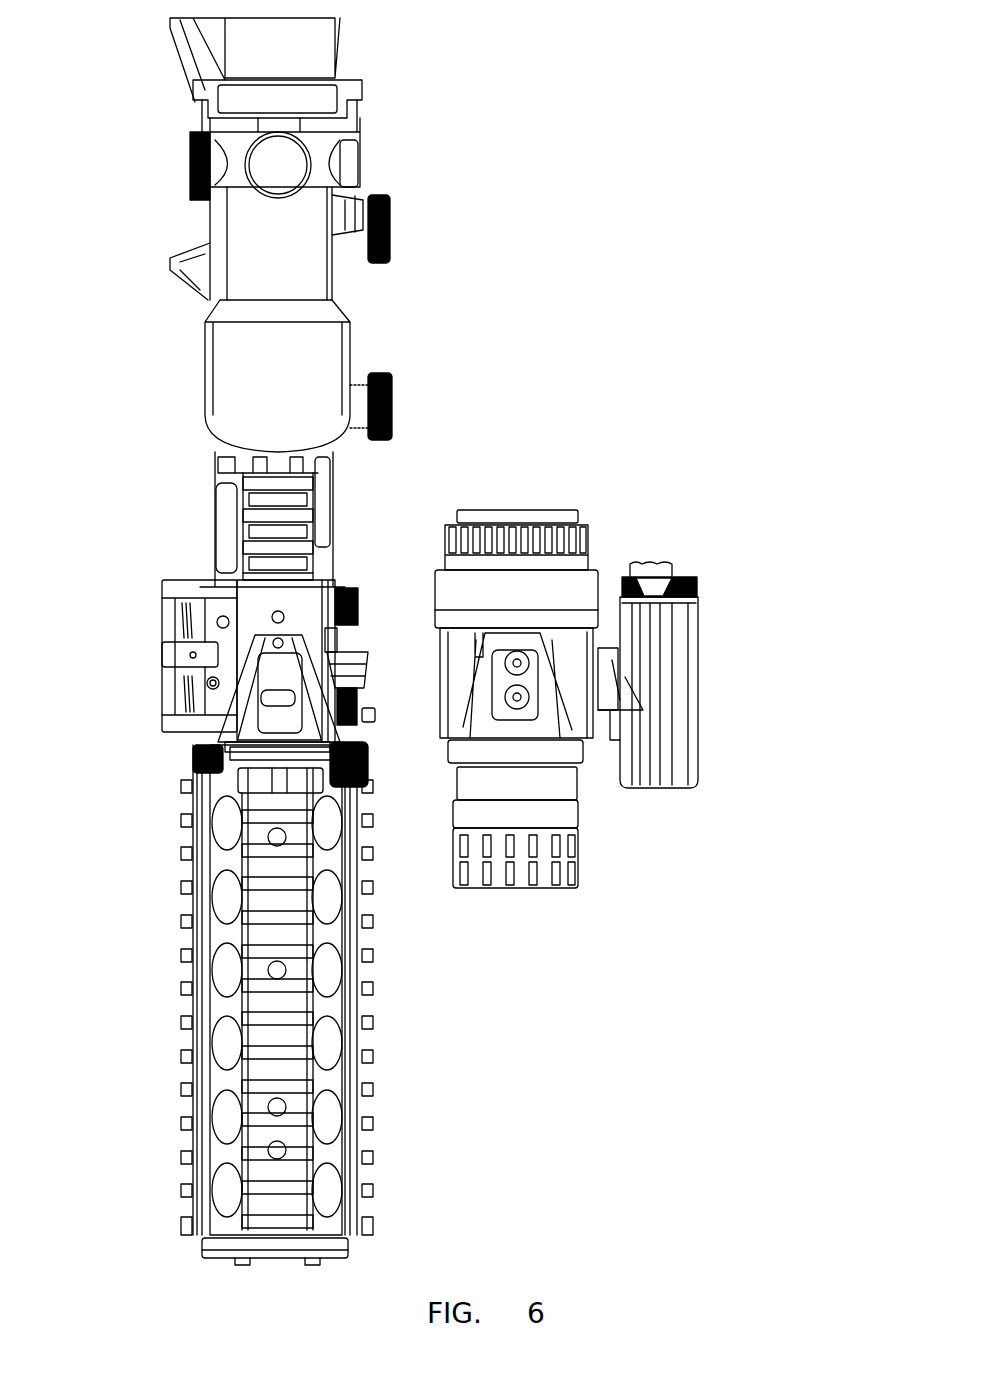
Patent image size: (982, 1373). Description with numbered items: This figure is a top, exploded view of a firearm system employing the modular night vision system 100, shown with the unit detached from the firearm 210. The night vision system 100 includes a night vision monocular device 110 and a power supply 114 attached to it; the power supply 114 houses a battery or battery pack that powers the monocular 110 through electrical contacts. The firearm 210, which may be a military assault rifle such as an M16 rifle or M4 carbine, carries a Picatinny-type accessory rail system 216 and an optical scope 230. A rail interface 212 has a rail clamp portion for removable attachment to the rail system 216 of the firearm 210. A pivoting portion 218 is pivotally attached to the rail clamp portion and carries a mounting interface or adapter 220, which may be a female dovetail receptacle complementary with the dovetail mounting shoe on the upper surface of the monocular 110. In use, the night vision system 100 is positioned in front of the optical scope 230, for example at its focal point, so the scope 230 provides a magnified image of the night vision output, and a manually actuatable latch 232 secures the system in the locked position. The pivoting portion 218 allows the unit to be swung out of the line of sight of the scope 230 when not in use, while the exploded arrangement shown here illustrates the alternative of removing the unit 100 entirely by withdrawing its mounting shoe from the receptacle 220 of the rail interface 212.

The modular night vision system 100 is at (593, 493).
The night vision monocular device 110 is at (577, 862).
The power supply 114 is at (702, 655).
The firearm 210 is at (217, 503).
The rail interface 212 is at (158, 617).
The rail system 216 is at (277, 870).
The pivoting portion 218 is at (215, 608).
The mounting interface or adapter 220 is at (313, 660).
The optical scope 230 is at (300, 373).
The manually actuatable latch 232 is at (368, 778).